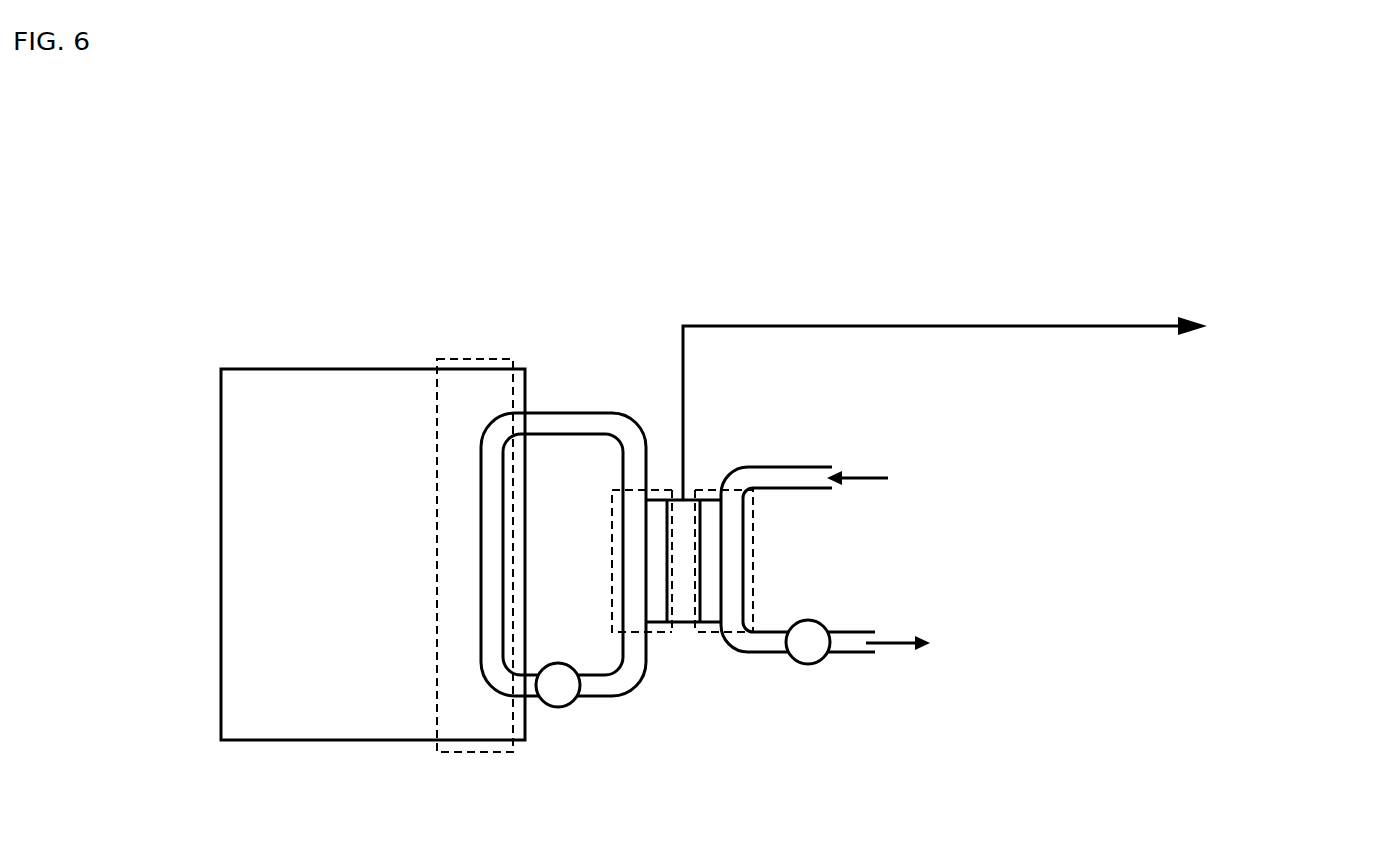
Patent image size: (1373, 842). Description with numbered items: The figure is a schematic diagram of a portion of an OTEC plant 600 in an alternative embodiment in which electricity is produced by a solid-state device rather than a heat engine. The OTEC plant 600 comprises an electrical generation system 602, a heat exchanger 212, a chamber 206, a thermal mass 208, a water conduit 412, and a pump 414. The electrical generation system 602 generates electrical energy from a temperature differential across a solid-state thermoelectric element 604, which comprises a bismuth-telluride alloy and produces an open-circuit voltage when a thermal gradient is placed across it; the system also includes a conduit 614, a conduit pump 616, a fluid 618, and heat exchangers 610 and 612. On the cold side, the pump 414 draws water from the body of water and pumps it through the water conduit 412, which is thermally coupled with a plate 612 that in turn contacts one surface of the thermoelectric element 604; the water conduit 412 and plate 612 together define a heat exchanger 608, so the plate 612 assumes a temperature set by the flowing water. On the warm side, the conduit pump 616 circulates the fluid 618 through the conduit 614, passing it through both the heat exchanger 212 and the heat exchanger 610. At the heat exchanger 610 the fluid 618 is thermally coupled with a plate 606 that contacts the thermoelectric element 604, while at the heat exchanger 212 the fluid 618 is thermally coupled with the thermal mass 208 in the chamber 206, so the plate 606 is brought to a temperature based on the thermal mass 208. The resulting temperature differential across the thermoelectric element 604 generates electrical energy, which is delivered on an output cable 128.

The OTEC plant 600 is at (206, 111).
The electrical generation system 602 is at (526, 249).
The solid-state thermoelectric element 604 is at (685, 551).
The plate 606 is at (664, 633).
The heat exchanger 608 is at (710, 633).
The heat exchanger 610 is at (665, 498).
The plate 612 is at (713, 499).
The conduit 614 is at (569, 412).
The conduit pump 616 is at (553, 692).
The fluid 618 is at (610, 680).
The chamber 206 is at (307, 368).
The thermal mass 208 is at (318, 531).
The heat exchanger 212 is at (482, 358).
The output cable 128 is at (1003, 325).
The water conduit 412 is at (798, 465).
The pump 414 is at (812, 650).